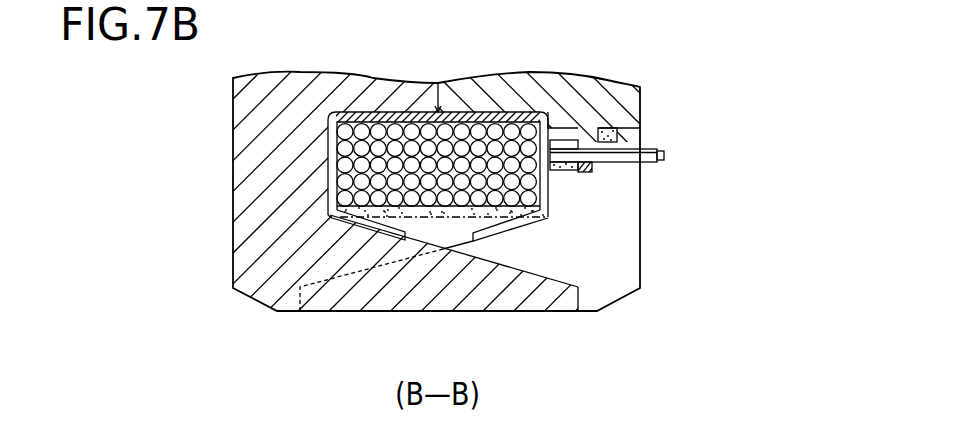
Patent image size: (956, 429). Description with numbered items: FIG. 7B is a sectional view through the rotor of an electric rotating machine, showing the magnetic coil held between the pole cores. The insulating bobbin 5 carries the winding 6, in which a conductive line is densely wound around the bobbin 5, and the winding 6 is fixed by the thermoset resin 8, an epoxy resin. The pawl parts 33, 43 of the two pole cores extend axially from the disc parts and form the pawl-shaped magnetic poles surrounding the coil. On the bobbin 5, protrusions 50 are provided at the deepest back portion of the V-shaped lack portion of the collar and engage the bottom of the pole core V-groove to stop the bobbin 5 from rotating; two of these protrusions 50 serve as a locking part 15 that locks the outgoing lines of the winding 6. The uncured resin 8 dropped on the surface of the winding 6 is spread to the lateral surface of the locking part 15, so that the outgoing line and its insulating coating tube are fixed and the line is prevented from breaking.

The insulating bobbin 5 is at (517, 112).
The winding 6 is at (330, 194).
The thermoset resin 8 is at (447, 212).
The locking part 15 is at (588, 173).
The pawl part 33 is at (497, 300).
The pawl part 43 is at (350, 298).
The protrusion 50 is at (575, 130).